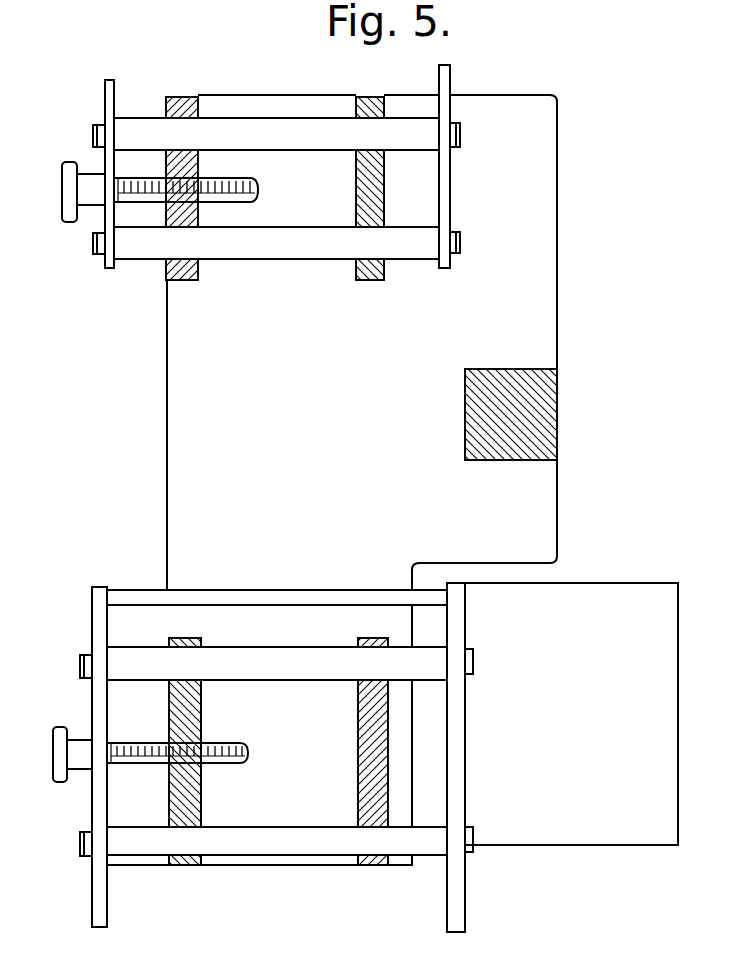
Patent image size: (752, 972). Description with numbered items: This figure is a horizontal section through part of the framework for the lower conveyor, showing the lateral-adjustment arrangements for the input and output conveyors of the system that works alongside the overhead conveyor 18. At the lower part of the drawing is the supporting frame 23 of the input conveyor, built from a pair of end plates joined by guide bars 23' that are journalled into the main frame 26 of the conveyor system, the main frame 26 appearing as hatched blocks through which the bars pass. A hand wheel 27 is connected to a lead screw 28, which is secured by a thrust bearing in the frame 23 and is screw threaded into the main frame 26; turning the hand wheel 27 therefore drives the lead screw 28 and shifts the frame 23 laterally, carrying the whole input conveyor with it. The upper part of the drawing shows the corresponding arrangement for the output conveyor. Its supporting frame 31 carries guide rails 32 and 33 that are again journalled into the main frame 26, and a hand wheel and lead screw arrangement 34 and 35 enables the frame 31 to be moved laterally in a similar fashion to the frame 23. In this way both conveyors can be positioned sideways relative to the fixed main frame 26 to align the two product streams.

The overhead conveyor 18 is at (181, 588).
The supporting frame 23 is at (280, 757).
The guide bars 23' is at (244, 759).
The main frame 26 is at (183, 103).
The hand wheel 27 is at (63, 737).
The lead screw 28 is at (132, 762).
The supporting frame 31 is at (444, 80).
The guide rail 32 is at (155, 250).
The guide rail 33 is at (292, 138).
The hand wheel 34 is at (71, 166).
The lead screw 35 is at (140, 182).